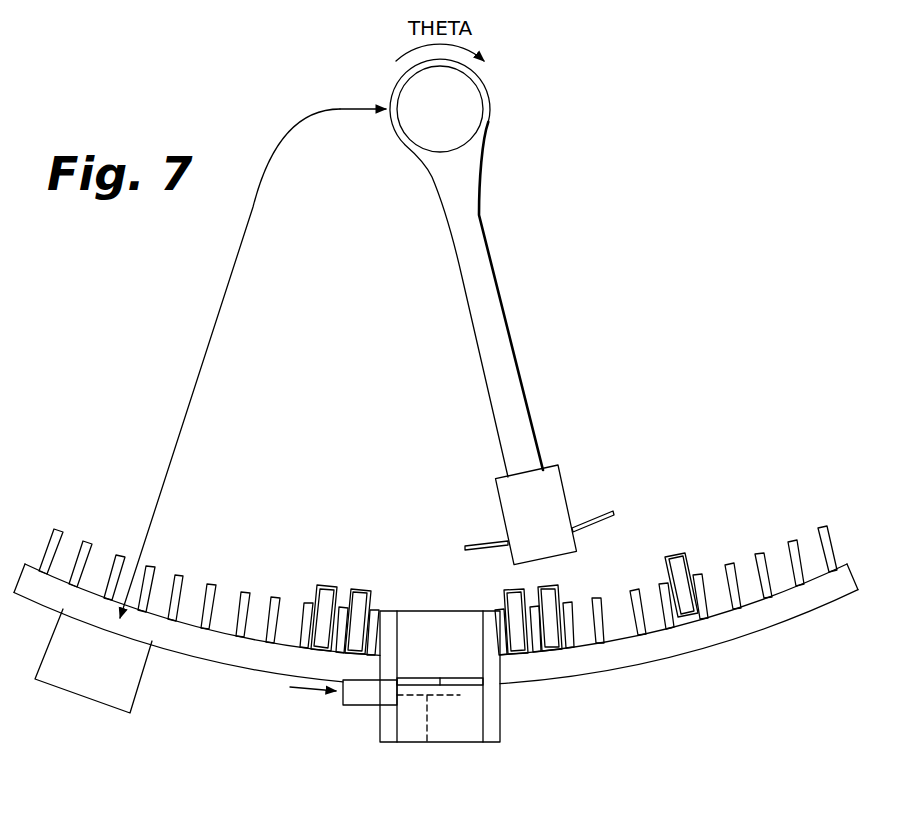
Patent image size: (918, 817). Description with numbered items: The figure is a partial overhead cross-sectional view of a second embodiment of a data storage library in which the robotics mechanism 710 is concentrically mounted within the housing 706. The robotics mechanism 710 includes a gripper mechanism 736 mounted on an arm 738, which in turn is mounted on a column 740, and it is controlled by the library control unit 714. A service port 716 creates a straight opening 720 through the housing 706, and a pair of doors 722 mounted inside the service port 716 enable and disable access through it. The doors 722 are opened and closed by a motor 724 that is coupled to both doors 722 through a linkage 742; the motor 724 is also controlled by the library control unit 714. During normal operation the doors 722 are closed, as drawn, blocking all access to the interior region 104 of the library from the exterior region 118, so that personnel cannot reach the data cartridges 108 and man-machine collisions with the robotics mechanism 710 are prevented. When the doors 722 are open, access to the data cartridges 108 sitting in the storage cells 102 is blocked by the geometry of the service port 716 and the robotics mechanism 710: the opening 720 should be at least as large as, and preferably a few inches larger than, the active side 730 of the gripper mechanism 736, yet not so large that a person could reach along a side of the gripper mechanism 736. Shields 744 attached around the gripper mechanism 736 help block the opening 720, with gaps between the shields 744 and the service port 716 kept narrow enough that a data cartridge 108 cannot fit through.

The storage cells 102 is at (747, 554).
The interior region 104 is at (742, 376).
The data cartridges 108 is at (686, 557).
The exterior region 118 is at (698, 798).
The housing 706 is at (687, 642).
The robotics mechanism 710 is at (514, 245).
The library control unit 714 is at (110, 690).
The service port 716 is at (500, 732).
The opening 720 is at (458, 746).
The doors 722 is at (460, 678).
The motor 724 is at (358, 699).
The active side 730 is at (575, 566).
The gripper mechanism 736 is at (545, 480).
The arm 738 is at (507, 375).
The column 740 is at (465, 109).
The linkage 742 is at (427, 742).
The shields 744 is at (595, 508).